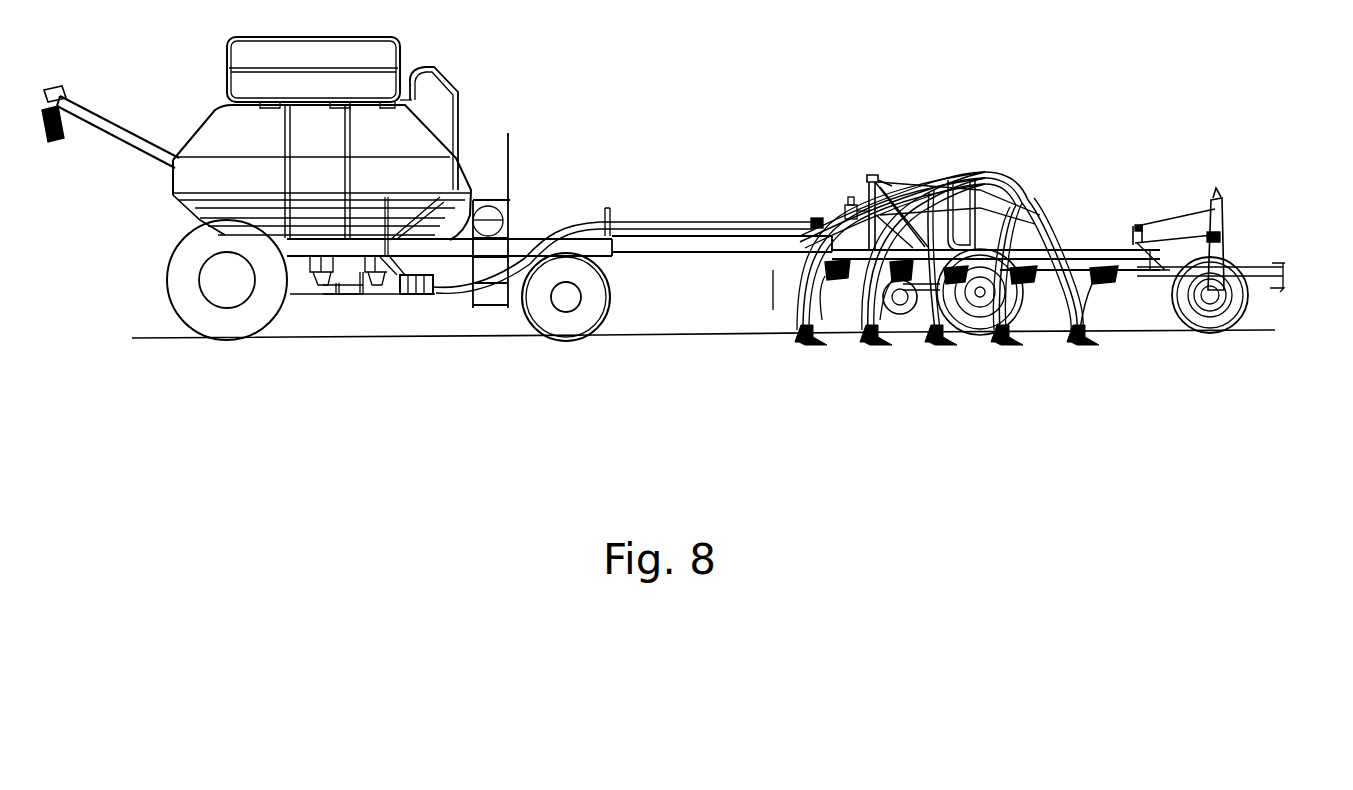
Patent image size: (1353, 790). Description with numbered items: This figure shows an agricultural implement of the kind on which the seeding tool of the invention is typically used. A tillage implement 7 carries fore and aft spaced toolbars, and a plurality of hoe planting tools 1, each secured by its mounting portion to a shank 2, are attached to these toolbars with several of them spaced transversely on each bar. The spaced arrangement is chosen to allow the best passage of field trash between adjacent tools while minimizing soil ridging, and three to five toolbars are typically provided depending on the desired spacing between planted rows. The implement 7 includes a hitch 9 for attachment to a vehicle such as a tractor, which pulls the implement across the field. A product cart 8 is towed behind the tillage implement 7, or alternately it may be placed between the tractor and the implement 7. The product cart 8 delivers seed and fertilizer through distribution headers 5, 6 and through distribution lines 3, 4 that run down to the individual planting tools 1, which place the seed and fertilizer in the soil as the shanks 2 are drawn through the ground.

The hoe planting tool 1 is at (818, 338).
The shank 2 is at (1066, 272).
The distribution line 3 is at (1040, 213).
The distribution line 4 is at (1057, 224).
The distribution header 5 is at (981, 160).
The distribution header 6 is at (942, 185).
The tillage implement 7 is at (837, 150).
The product cart 8 is at (594, 146).
The hitch 9 is at (1260, 262).